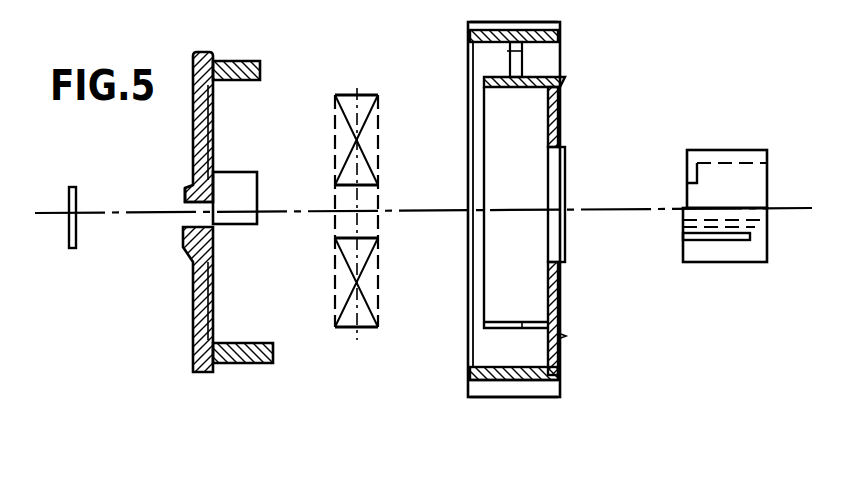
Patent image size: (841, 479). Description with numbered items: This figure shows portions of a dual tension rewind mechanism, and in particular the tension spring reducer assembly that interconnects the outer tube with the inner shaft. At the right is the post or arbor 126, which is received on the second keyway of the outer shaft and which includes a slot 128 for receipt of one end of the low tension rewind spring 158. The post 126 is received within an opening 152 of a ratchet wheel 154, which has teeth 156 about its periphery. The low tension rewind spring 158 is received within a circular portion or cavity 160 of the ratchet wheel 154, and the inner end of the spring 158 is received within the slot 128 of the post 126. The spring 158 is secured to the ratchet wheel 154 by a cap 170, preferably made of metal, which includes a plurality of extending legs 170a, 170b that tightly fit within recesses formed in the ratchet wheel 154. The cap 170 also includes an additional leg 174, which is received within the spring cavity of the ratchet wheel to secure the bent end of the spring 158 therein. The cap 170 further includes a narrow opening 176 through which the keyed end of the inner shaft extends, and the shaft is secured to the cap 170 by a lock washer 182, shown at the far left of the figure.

The post or arbor 126 is at (686, 236).
The slot 128 is at (683, 237).
The opening 152 is at (524, 226).
The ratchet wheel 154 is at (556, 225).
The teeth 156 is at (486, 385).
The low tension rewind spring 158 is at (348, 95).
The circular portion or cavity 160 is at (503, 90).
The cap 170 is at (217, 210).
The extending leg 170a is at (235, 61).
The extending leg 170b is at (233, 172).
The additional leg 174 is at (237, 343).
The narrow opening 176 is at (186, 200).
The lock washer 182 is at (67, 240).